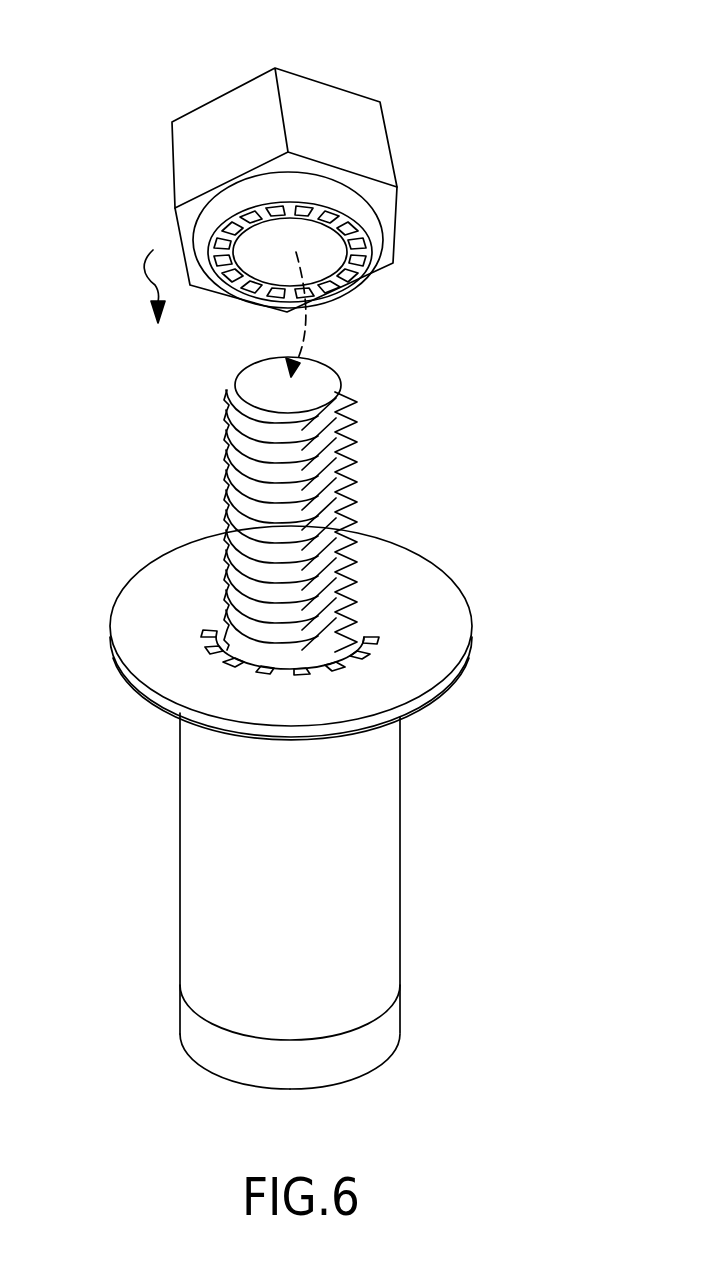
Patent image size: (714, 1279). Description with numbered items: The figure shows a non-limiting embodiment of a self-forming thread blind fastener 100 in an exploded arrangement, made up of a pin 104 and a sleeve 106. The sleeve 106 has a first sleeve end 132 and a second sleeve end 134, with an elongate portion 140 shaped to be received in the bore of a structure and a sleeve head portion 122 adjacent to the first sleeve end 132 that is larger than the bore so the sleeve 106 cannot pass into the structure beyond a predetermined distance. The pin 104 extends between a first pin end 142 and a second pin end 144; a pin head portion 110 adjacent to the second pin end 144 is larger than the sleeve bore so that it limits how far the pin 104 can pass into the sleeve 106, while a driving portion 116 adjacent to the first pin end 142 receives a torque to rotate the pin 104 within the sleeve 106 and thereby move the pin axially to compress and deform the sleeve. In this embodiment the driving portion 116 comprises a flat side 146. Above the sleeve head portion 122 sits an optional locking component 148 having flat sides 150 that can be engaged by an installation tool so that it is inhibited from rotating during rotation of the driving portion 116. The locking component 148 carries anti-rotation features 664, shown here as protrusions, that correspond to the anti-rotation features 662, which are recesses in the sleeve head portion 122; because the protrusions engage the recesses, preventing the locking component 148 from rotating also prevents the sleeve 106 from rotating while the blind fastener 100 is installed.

The self-forming thread blind fastener 100 is at (143, 270).
The pin 104 is at (227, 438).
The sleeve 106 is at (198, 782).
The pin head portion 110 is at (218, 1045).
The driving portion 116 is at (337, 443).
The sleeve head portion 122 is at (408, 592).
The first sleeve end 132 is at (197, 582).
The second sleeve end 134 is at (203, 1012).
The elongate portion 140 is at (380, 761).
The first pin end 142 is at (327, 380).
The second pin end 144 is at (357, 1078).
The flat side 146 is at (323, 480).
The locking component 148 is at (388, 202).
The flat sides 150 is at (230, 112).
The anti-rotation features (recesses) 662 is at (213, 642).
The anti-rotation features (protrusions) 664 is at (360, 248).